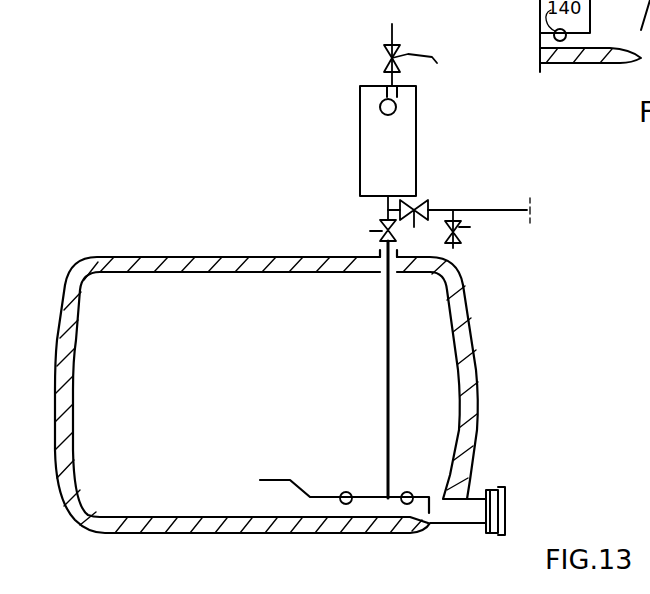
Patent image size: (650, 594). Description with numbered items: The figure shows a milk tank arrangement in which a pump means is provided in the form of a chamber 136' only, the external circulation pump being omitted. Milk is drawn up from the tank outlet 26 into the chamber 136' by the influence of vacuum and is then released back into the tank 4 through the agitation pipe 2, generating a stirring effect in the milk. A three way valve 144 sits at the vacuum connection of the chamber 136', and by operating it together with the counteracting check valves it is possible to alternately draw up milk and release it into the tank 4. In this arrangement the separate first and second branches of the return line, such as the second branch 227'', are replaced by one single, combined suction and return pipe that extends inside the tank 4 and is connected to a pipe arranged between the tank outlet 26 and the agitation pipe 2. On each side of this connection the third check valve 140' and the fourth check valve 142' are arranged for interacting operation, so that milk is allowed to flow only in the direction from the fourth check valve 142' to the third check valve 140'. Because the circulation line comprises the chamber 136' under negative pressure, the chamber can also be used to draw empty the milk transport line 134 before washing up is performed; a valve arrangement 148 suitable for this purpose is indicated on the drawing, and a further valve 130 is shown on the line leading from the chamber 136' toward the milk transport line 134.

The agitation pipe 2 is at (268, 480).
The tank 4 is at (236, 241).
The tank outlet 26 is at (448, 524).
The valve 130 is at (416, 211).
The milk transport line 134 is at (496, 212).
The chamber 136' is at (388, 141).
The third check valve 140' is at (340, 481).
The fourth check valve 142' is at (425, 480).
The three way valve 144 is at (412, 37).
The valve arrangement 148 is at (378, 222).
The second branch 227'' is at (358, 369).